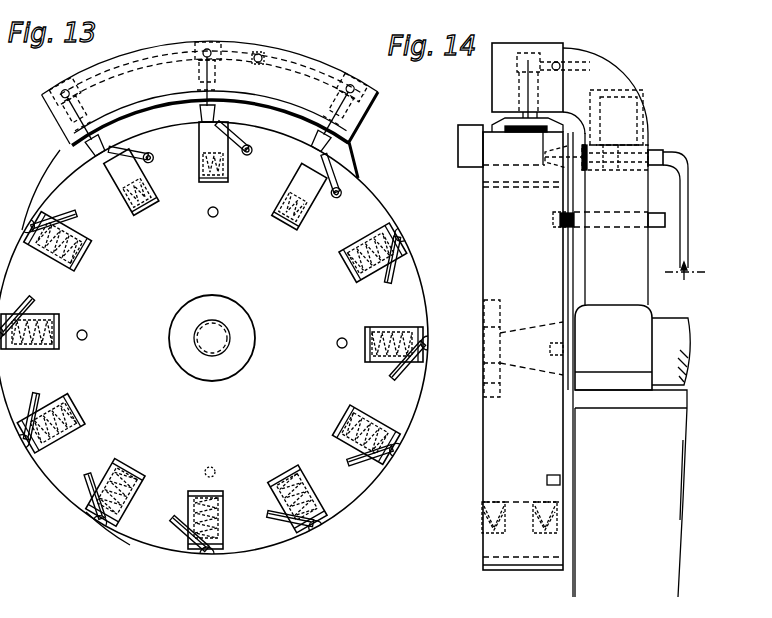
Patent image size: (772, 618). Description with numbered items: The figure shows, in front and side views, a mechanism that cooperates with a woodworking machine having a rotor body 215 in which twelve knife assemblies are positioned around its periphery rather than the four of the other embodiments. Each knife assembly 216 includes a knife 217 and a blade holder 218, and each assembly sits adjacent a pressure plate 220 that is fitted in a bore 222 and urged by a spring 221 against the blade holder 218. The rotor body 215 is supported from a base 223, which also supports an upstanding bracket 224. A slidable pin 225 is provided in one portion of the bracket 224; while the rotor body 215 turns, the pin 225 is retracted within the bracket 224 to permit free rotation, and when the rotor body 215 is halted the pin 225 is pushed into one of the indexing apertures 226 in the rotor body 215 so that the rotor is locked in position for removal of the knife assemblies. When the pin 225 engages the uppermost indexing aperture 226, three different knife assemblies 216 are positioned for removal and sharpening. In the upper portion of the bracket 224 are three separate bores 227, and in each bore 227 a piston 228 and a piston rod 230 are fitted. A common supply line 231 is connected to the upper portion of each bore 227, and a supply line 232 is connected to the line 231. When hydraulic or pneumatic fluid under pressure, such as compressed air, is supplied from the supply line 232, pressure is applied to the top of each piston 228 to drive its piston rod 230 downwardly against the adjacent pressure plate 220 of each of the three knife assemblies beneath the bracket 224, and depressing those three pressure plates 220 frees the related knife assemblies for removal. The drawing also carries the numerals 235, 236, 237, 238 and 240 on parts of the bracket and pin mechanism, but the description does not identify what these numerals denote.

In FIG. 13, the rotor body 215 is at (214, 338).
In FIG. 14, the rotor body 215 is at (527, 364).
In FIG. 13, the knife assembly 216 is at (84, 513).
In FIG. 14, the knife assembly 216 is at (456, 143).
In FIG. 13, the knife 217 is at (68, 145).
In FIG. 13, the blade holder 218 is at (82, 212).
In FIG. 13, the pressure plate 220 is at (142, 160).
In FIG. 13, the spring 221 is at (214, 188).
In FIG. 13, the bore 222 is at (40, 246).
In FIG. 14, the base 223 is at (629, 502).
In FIG. 13, the bracket 224 is at (210, 109).
In FIG. 14, the bracket 224 is at (629, 365).
In FIG. 14, the slidable pin 225 is at (566, 224).
In FIG. 13, the indexing aperture 226 is at (88, 340).
In FIG. 14, the indexing aperture 226 is at (547, 480).
In FIG. 13, the bore 227 is at (268, 66).
In FIG. 13, the piston 228 is at (78, 138).
In FIG. 13, the piston rod 230 is at (238, 84).
In FIG. 13, the common supply line 231 is at (310, 73).
In FIG. 14, the common supply line 231 is at (556, 48).
In FIG. 13, the supply line 232 is at (260, 54).
In FIG. 14, the supply line 232 is at (587, 63).
In FIG. 13, the link rod 235 is at (147, 152).
In FIG. 14, the link rod 235 is at (606, 158).
In FIG. 14, the conical seat 236 is at (557, 153).
In FIG. 14, the curved arm 237 is at (622, 92).
In FIG. 14, the slide block 238 is at (645, 122).
In FIG. 14, the tube / conduit 240 is at (685, 232).